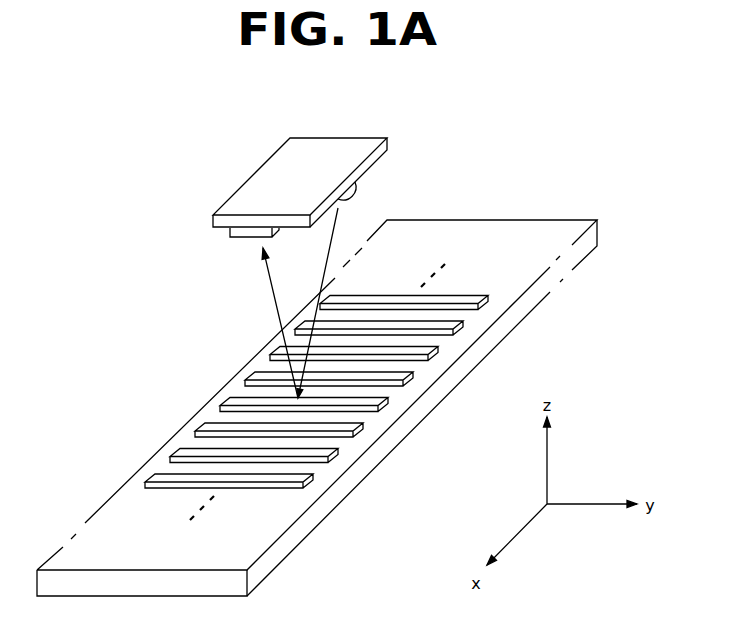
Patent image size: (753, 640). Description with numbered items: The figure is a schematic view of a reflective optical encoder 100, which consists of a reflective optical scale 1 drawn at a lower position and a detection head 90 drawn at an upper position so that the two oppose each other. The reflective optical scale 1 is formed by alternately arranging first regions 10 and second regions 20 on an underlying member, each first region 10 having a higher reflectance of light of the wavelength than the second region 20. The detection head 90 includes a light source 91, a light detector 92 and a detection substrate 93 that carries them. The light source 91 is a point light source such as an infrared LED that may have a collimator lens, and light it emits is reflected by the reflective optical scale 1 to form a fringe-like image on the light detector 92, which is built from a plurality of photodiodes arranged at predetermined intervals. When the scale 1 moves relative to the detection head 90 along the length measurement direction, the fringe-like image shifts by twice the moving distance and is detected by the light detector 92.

The reflective optical encoder 100 is at (128, 143).
The reflective optical scale 1 is at (540, 196).
The first region 10 is at (313, 478).
The second region 20 is at (193, 440).
The detection head 90 is at (352, 114).
The light source 91 is at (357, 191).
The light detector 92 is at (228, 233).
The detection substrate 93 is at (388, 148).